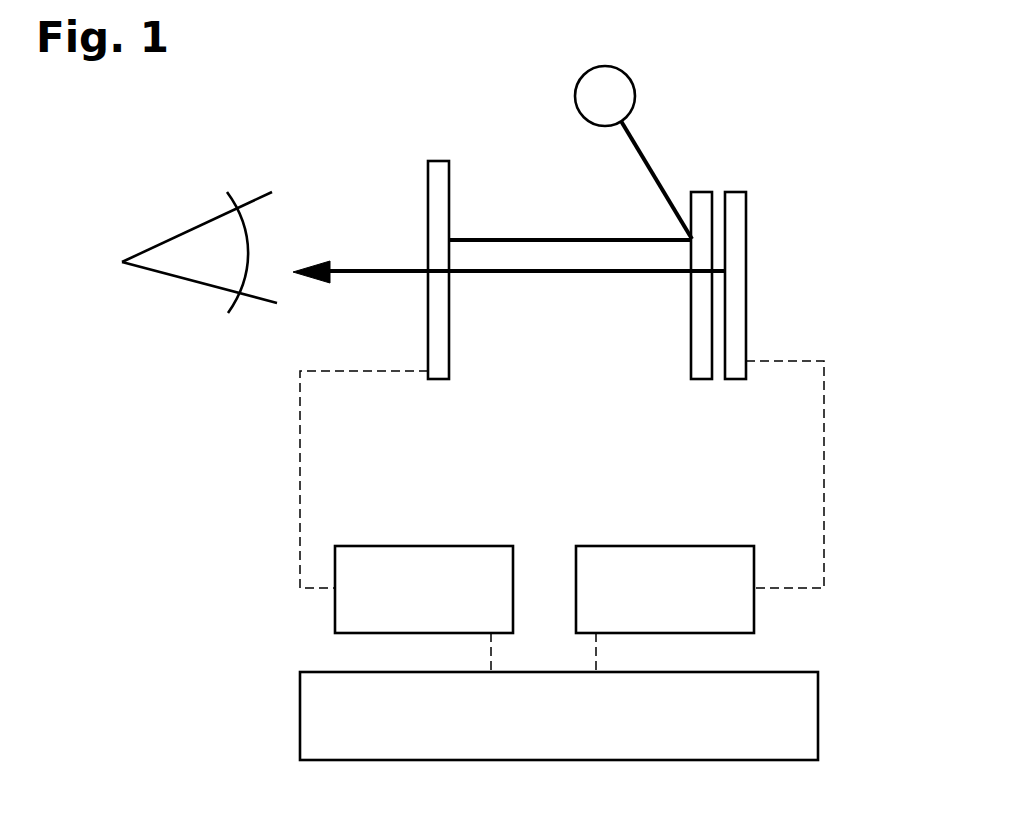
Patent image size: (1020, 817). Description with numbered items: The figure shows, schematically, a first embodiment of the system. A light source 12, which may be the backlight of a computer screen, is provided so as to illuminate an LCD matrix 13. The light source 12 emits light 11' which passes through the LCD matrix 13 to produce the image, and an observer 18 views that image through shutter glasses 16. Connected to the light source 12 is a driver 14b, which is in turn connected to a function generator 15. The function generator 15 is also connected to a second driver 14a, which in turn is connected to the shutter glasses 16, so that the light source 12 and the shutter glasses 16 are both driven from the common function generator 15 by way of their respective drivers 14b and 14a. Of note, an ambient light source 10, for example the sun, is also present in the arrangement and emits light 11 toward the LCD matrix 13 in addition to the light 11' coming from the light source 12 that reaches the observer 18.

The ambient light source 10 is at (627, 74).
The light 11 is at (688, 173).
The light 11' is at (509, 319).
The light source 12 is at (737, 280).
The LCD matrix 13 is at (703, 340).
The second driver 14a is at (463, 546).
The driver 14b is at (630, 546).
The function generator 15 is at (818, 708).
The shutter glasses 16 is at (449, 320).
The observer 18 is at (207, 217).